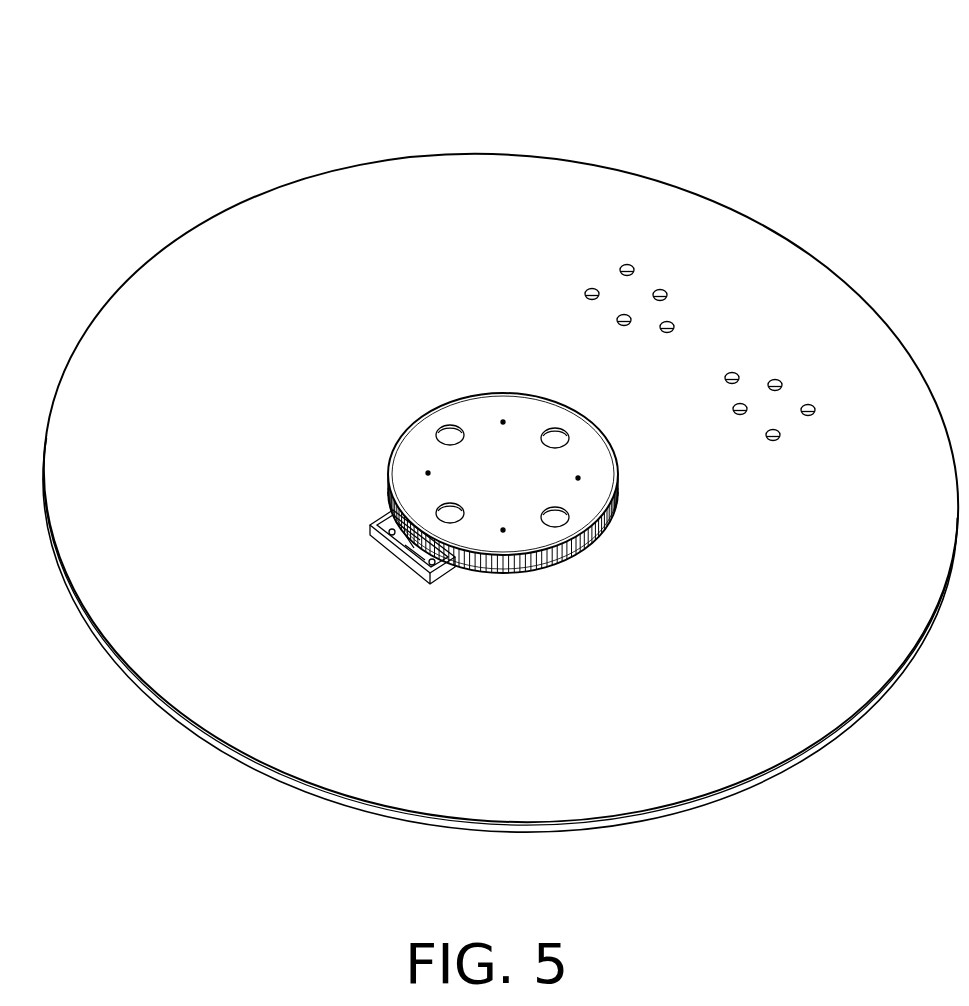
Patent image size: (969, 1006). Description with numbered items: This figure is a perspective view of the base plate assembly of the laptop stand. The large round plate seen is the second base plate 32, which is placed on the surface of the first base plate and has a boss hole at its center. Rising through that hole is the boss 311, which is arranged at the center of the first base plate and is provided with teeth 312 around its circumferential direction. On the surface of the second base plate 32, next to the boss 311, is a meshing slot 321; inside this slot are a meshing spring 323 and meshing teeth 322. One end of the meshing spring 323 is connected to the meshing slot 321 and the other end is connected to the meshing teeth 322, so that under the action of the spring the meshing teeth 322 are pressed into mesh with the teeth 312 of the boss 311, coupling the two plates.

The second base plate 32 is at (673, 232).
The boss 311 is at (498, 480).
The teeth 312 is at (560, 560).
The meshing slot 321 is at (377, 520).
The meshing teeth 322 is at (398, 553).
The meshing spring 323 is at (433, 567).